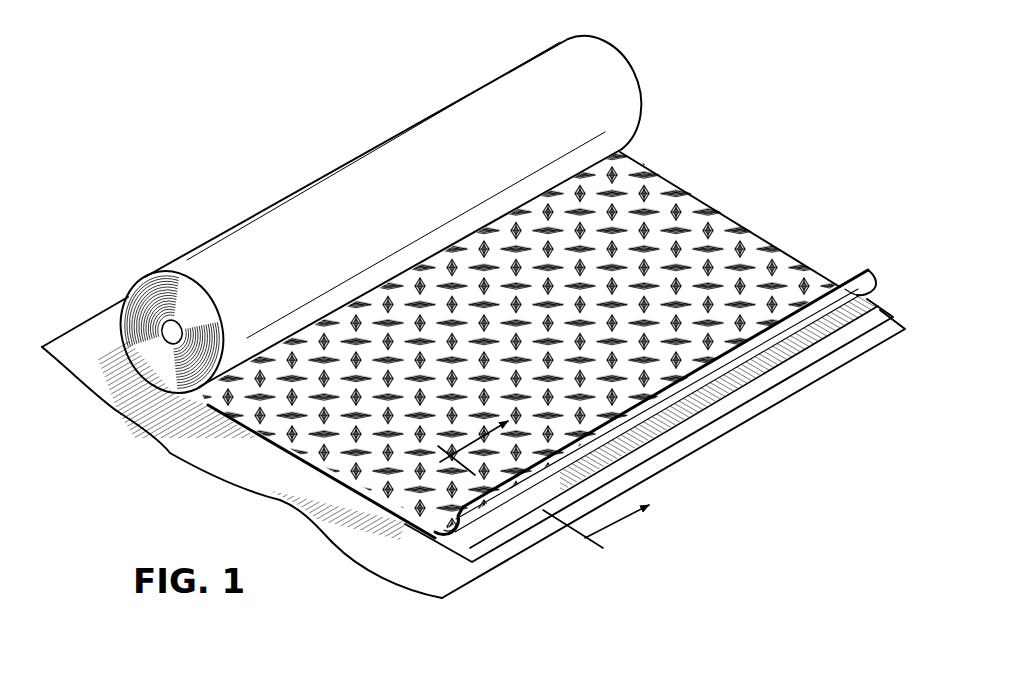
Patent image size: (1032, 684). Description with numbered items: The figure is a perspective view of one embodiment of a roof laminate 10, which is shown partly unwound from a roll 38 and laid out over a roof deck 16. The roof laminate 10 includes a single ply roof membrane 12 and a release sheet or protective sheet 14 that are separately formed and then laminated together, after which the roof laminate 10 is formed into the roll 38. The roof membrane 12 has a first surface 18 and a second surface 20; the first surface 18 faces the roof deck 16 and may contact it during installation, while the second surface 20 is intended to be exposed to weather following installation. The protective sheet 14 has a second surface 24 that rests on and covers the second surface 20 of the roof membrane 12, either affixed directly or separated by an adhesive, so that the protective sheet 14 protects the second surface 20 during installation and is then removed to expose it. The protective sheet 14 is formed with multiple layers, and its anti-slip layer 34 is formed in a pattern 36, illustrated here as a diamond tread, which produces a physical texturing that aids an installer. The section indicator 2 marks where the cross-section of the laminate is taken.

The roof laminate 10 is at (812, 137).
The single ply roof membrane 12 is at (702, 437).
The release sheet or protective sheet 14 is at (878, 274).
The roof deck 16 is at (375, 580).
The first surface 18 is at (517, 554).
The second surface 20 is at (700, 413).
The second surface 24 is at (857, 296).
The anti-slip layer 34 is at (846, 277).
The pattern 36 is at (696, 220).
The roll 38 is at (643, 97).
The section line of FIG. 2 is at (530, 498).